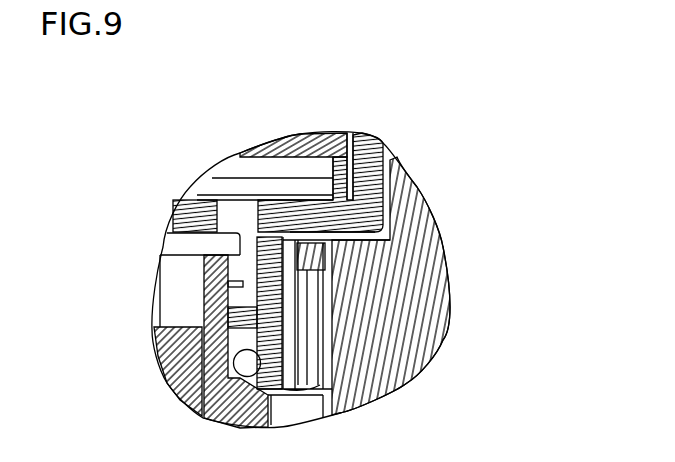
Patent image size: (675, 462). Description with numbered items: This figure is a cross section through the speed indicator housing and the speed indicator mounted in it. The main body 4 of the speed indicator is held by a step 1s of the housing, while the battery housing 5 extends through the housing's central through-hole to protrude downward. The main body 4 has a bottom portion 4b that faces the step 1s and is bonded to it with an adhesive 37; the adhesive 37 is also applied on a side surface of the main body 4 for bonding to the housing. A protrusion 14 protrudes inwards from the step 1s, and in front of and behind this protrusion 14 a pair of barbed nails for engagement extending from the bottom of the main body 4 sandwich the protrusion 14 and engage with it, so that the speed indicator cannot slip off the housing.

The main body 4 is at (237, 172).
The bottom portion 4b is at (312, 237).
The battery housing 5 is at (222, 395).
The step 1s is at (297, 258).
The protrusion 14 is at (305, 269).
The adhesive 37 is at (393, 182).